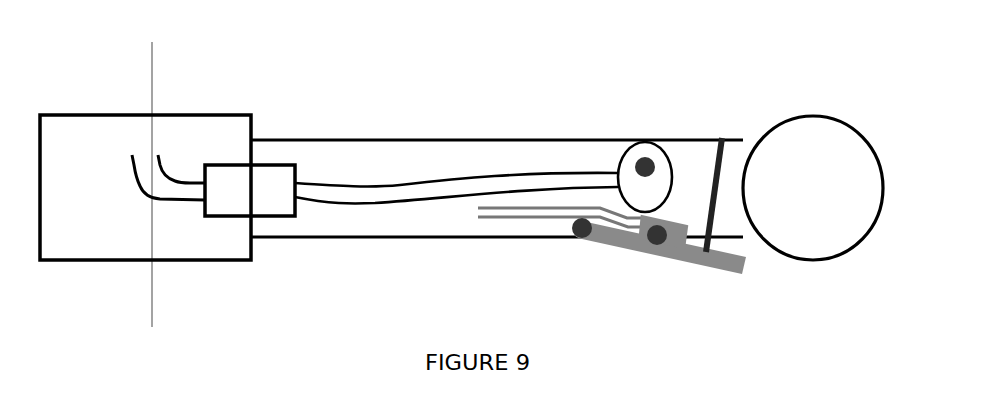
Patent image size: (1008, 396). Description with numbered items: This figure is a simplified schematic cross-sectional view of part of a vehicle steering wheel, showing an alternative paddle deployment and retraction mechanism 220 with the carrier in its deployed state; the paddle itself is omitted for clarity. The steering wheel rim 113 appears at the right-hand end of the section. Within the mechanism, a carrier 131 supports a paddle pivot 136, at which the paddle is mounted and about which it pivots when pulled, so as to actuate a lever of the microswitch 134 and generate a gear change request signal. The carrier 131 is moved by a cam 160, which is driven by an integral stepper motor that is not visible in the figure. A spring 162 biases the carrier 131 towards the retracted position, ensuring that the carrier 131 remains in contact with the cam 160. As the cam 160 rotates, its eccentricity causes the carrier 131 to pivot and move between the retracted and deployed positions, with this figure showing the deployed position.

The paddle deployment and retraction mechanism 220 is at (576, 109).
The cam 160 is at (666, 163).
The spring 162 is at (720, 140).
The steering wheel rim 113 is at (808, 147).
The carrier 131 is at (613, 243).
The paddle pivot 136 is at (657, 243).
The microswitch 134 is at (677, 243).